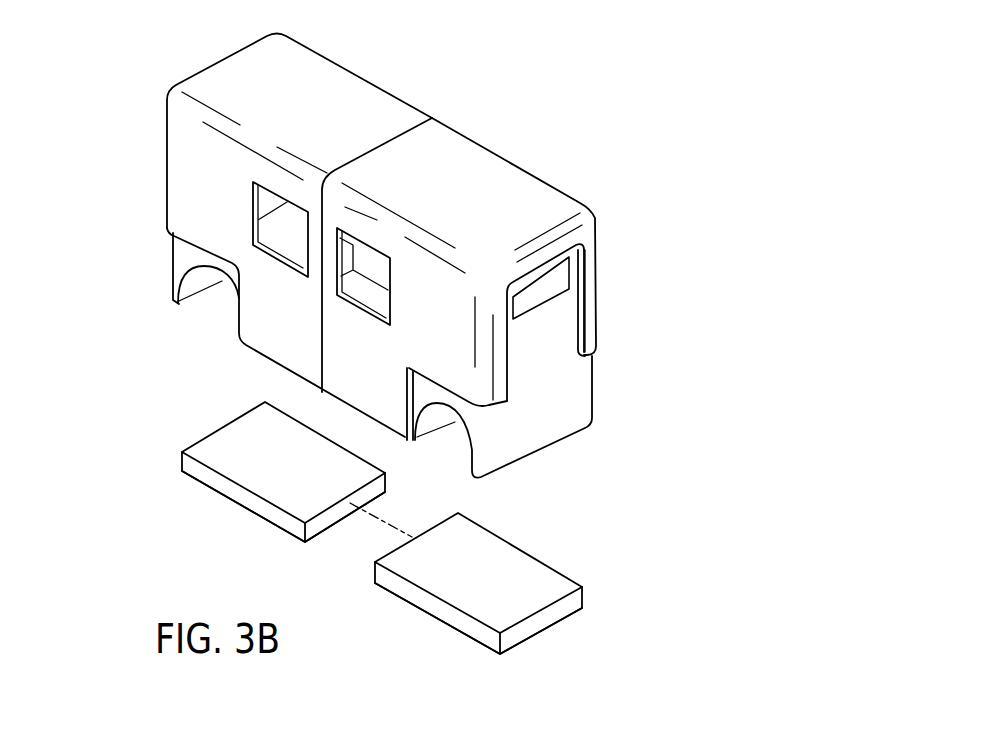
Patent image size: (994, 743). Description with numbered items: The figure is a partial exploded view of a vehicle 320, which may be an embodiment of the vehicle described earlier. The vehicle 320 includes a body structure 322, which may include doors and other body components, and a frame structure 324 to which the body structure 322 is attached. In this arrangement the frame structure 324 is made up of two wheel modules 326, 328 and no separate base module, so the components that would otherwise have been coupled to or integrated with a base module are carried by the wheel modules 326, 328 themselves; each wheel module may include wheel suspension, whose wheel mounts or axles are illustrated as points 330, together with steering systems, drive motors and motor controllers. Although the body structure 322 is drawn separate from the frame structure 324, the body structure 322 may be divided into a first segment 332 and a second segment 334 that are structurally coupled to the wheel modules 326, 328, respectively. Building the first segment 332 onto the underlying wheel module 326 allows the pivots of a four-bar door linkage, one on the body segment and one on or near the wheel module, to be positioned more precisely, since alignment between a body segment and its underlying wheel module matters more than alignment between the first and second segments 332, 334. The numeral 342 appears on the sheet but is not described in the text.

The vehicle 320 is at (543, 92).
The body structure 322 is at (598, 318).
The frame structure 324 is at (145, 418).
The wheel module 326 is at (212, 432).
The wheel module 328 is at (565, 577).
The points 330 is at (222, 486).
The first segment 332 is at (385, 76).
The second segment 334 is at (493, 138).
The roof 342 is at (448, 61).